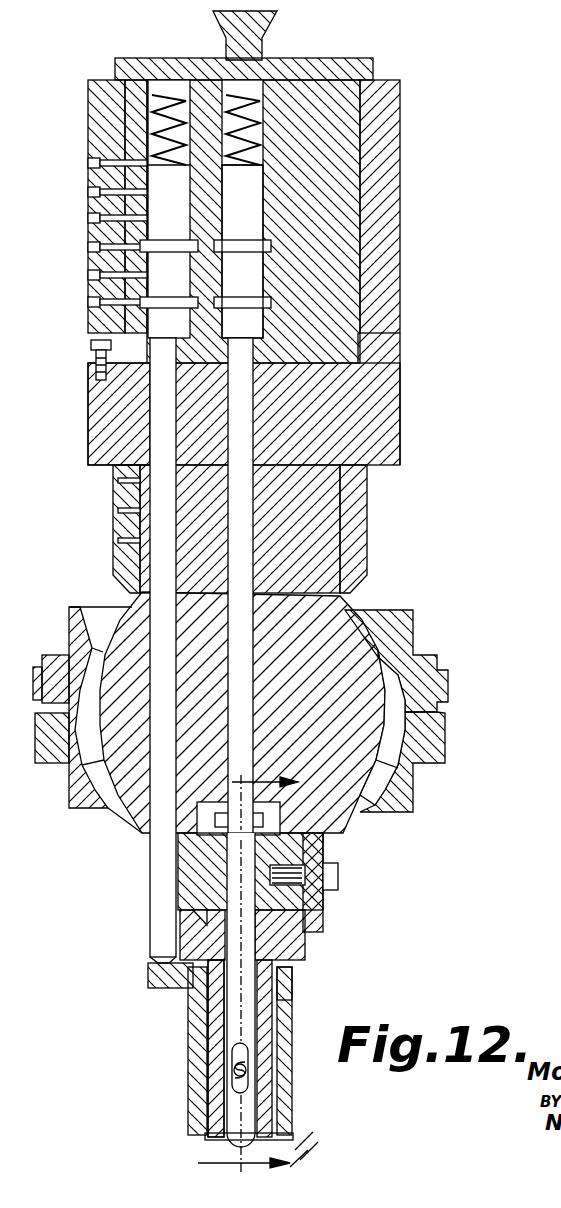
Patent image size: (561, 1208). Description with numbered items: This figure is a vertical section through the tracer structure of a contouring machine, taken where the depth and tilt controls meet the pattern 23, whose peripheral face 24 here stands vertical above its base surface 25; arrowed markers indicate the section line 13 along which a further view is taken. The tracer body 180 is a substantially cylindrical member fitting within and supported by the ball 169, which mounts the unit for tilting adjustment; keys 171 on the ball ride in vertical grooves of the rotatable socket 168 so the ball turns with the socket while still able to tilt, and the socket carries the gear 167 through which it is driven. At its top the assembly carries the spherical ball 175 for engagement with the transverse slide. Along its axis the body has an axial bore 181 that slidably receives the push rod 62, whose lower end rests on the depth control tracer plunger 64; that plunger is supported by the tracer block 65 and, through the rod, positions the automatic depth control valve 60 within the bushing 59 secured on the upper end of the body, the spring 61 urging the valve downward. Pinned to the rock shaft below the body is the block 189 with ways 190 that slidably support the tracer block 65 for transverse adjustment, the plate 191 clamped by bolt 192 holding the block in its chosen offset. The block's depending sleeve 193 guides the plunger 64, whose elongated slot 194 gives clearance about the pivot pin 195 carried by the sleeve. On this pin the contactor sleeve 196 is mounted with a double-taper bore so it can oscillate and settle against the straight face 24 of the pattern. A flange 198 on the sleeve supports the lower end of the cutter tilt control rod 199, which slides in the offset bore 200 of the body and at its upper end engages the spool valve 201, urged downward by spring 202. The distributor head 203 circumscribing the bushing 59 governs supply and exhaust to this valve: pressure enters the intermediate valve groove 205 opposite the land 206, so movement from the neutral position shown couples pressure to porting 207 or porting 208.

The section line 13 is at (229, 977).
The pattern 23 is at (305, 1002).
The peripheral face 24 is at (293, 993).
The base surface 25 is at (217, 1147).
The bushing 59 is at (362, 226).
The automatic depth control valve 60 is at (262, 181).
The spring 61 is at (255, 100).
The push rod 62 is at (247, 507).
The depth control tracer plunger 64 is at (233, 1015).
The tracer block 65 is at (305, 947).
The gear 167 is at (452, 692).
The rotatable socket 168 is at (410, 800).
The ball 169 is at (360, 625).
The keys 171 is at (440, 665).
The spherical ball 175 is at (214, 24).
The tracer body 180 is at (400, 450).
The axial bore 181 is at (255, 533).
The block 189 is at (192, 877).
The ways 190 is at (207, 927).
The plate 191 is at (327, 852).
The bolt 192 is at (337, 882).
The sleeve 193 is at (213, 1005).
The elongated slot 194 is at (233, 1057).
The pivot pin 195 is at (233, 1072).
The contactor sleeve 196 is at (290, 1135).
The flange 198 is at (150, 977).
The cutter tilt control rod 199 is at (153, 861).
The offset bore 200 is at (150, 420).
The spool valve 201 is at (135, 324).
The spring 202 is at (160, 100).
The distributor head 203 is at (400, 108).
The intermediate valve groove 205 is at (112, 262).
The land 206 is at (130, 232).
The porting 207 is at (118, 190).
The porting 208 is at (125, 295).